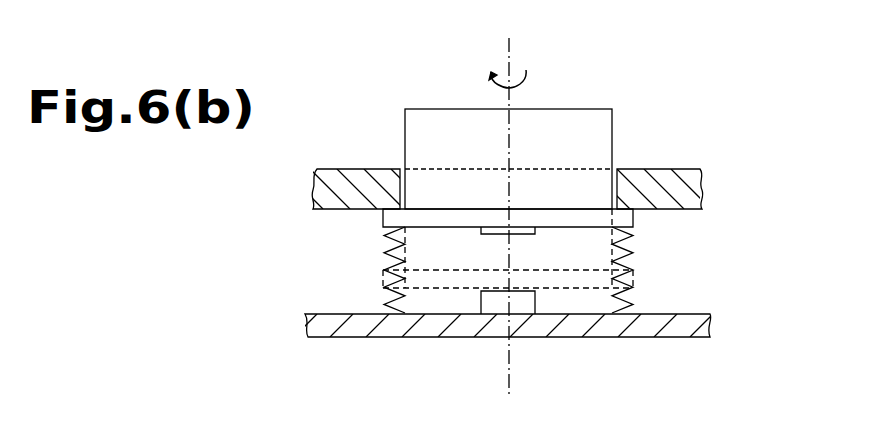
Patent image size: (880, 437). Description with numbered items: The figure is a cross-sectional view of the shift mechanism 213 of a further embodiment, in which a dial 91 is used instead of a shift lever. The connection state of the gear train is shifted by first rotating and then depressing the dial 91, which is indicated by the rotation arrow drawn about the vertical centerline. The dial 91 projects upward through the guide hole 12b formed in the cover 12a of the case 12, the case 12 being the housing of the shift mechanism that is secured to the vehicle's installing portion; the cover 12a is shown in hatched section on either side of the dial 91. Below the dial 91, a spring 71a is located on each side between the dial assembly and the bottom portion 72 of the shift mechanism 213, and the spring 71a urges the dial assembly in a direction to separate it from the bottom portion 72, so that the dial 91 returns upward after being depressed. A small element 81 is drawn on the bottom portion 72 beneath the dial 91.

The shift mechanism 213 is at (315, 82).
The dial 91 is at (573, 116).
The case 12 is at (670, 168).
The cover 12a is at (700, 172).
The guide hole 12b is at (402, 178).
The spring 71a is at (386, 246).
The support boss 81 is at (520, 306).
The bottom portion 72 is at (658, 330).